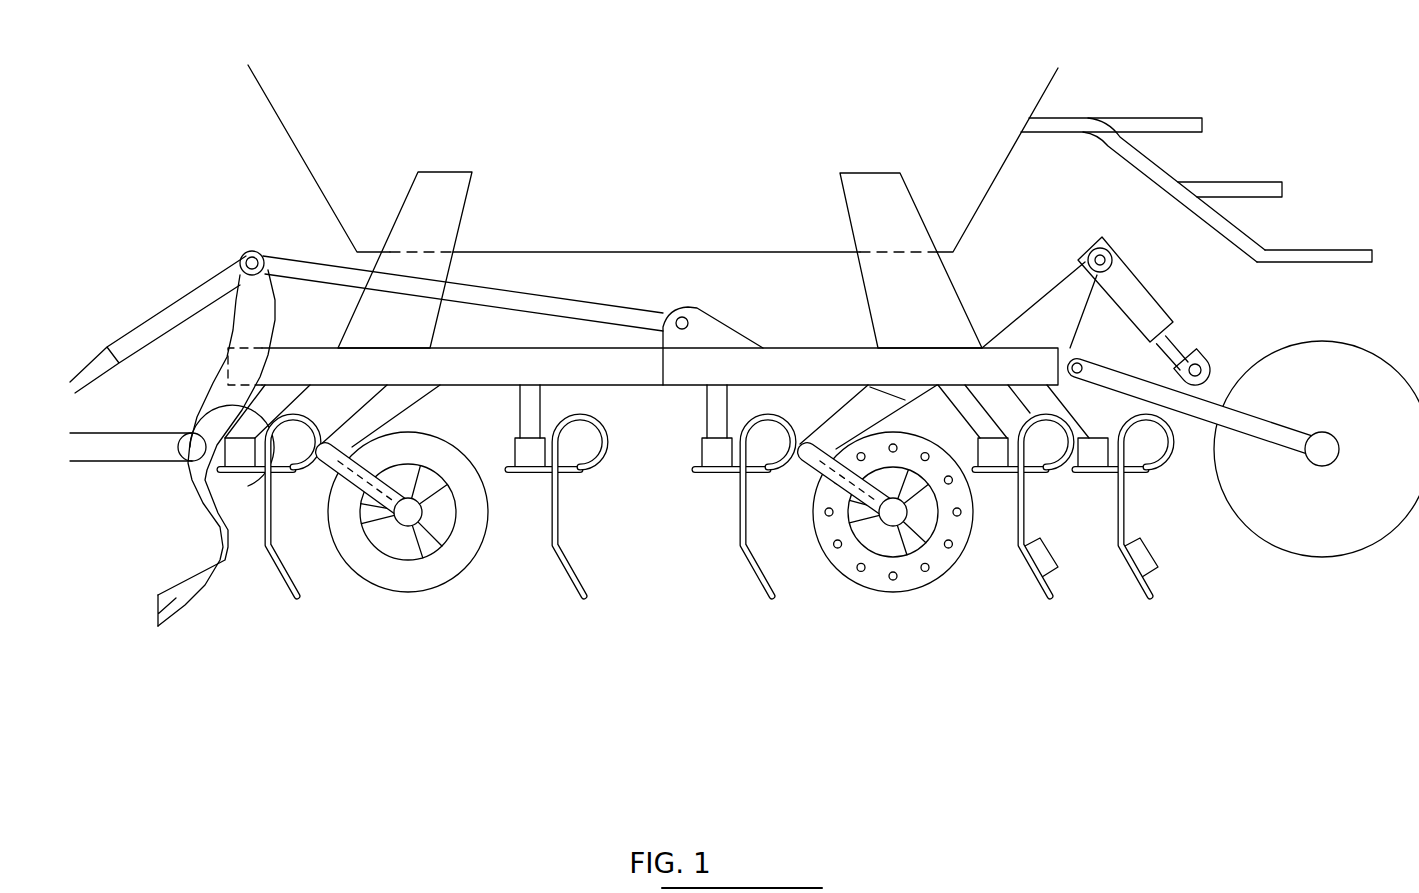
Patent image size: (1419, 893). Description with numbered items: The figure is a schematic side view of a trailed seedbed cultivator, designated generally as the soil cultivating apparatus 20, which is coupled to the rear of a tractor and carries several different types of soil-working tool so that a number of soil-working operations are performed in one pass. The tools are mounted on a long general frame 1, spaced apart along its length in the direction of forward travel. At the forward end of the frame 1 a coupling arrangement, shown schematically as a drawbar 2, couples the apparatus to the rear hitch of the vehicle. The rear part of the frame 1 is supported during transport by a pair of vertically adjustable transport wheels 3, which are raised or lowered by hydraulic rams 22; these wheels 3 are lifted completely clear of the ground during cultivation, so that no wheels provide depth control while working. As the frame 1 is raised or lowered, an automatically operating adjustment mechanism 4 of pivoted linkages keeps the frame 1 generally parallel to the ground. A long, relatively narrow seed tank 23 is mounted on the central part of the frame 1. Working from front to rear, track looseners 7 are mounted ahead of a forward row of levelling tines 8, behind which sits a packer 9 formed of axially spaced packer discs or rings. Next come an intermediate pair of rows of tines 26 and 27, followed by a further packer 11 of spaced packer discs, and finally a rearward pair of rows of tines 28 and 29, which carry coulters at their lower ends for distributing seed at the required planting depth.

The frame 1 is at (548, 365).
The drawbar 2 is at (112, 447).
The transport wheels 3 is at (1337, 527).
The adjustment mechanism 4 is at (605, 312).
The track looseners 7 is at (175, 598).
The levelling tines 8 is at (285, 580).
The packer 9 is at (400, 577).
The further packer 11 is at (880, 580).
The soil cultivating apparatus 20 is at (812, 168).
The hydraulic rams 22 is at (1143, 297).
The seed tank 23 is at (763, 73).
The tines 26 is at (565, 570).
The tines 27 is at (757, 570).
The tines 28 is at (1028, 573).
The tines 29 is at (1137, 573).